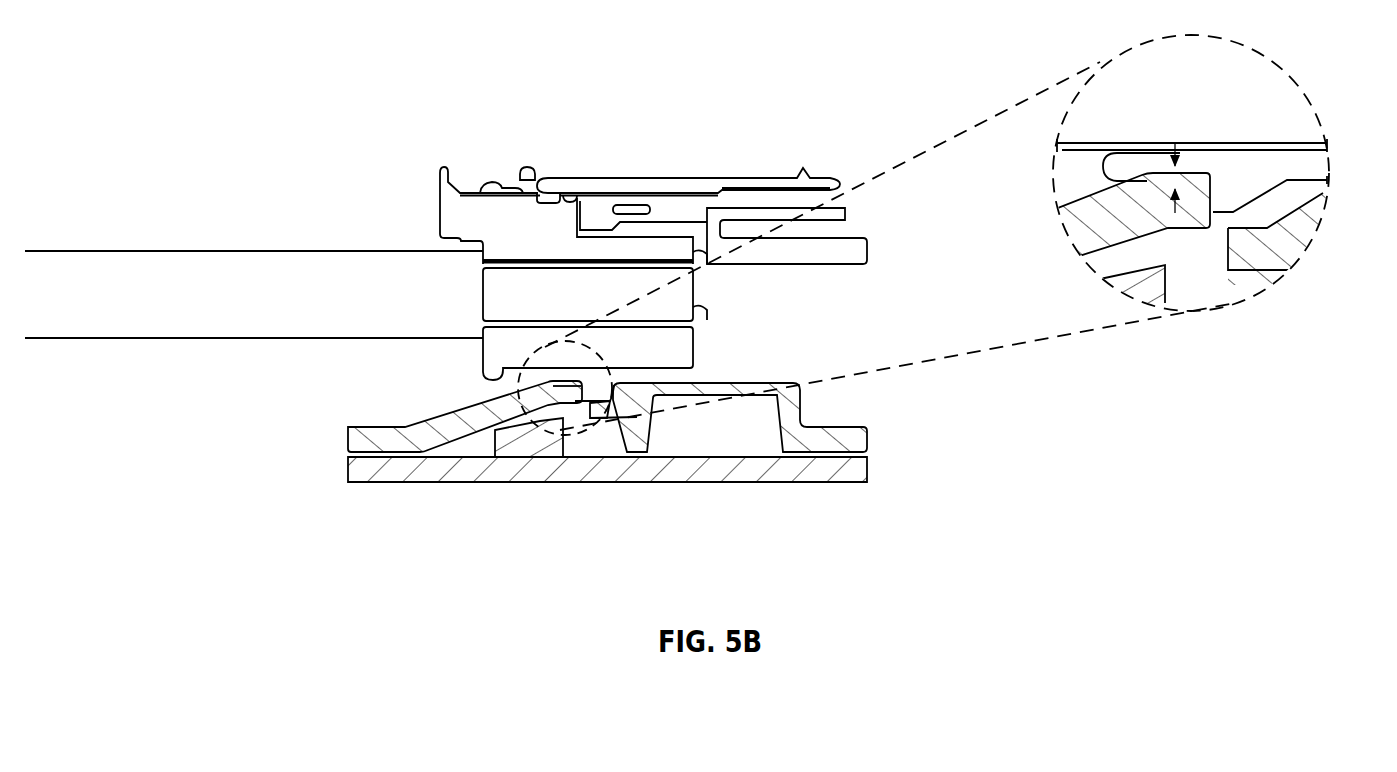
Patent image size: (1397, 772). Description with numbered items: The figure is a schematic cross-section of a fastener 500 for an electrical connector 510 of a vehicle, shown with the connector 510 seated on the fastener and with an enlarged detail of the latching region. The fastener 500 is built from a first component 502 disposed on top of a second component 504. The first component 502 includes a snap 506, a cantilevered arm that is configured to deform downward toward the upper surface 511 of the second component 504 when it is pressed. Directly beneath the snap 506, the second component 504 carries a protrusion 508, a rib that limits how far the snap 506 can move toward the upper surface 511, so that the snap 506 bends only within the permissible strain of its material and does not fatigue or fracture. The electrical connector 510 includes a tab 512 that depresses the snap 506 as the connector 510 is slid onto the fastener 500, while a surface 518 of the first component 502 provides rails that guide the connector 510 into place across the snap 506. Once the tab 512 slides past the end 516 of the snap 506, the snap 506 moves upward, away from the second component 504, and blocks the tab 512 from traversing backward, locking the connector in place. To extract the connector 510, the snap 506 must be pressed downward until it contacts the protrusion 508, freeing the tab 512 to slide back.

The fastener 500 is at (466, 387).
The first component 502 is at (960, 322).
The second component 504 is at (880, 471).
The snap 506 is at (440, 432).
The protrusion 508 is at (515, 447).
The electrical connector 510 is at (560, 158).
The upper surface 511 is at (600, 450).
The tab 512 is at (1308, 168).
The end 516 is at (1213, 213).
The surface 518 is at (750, 378).